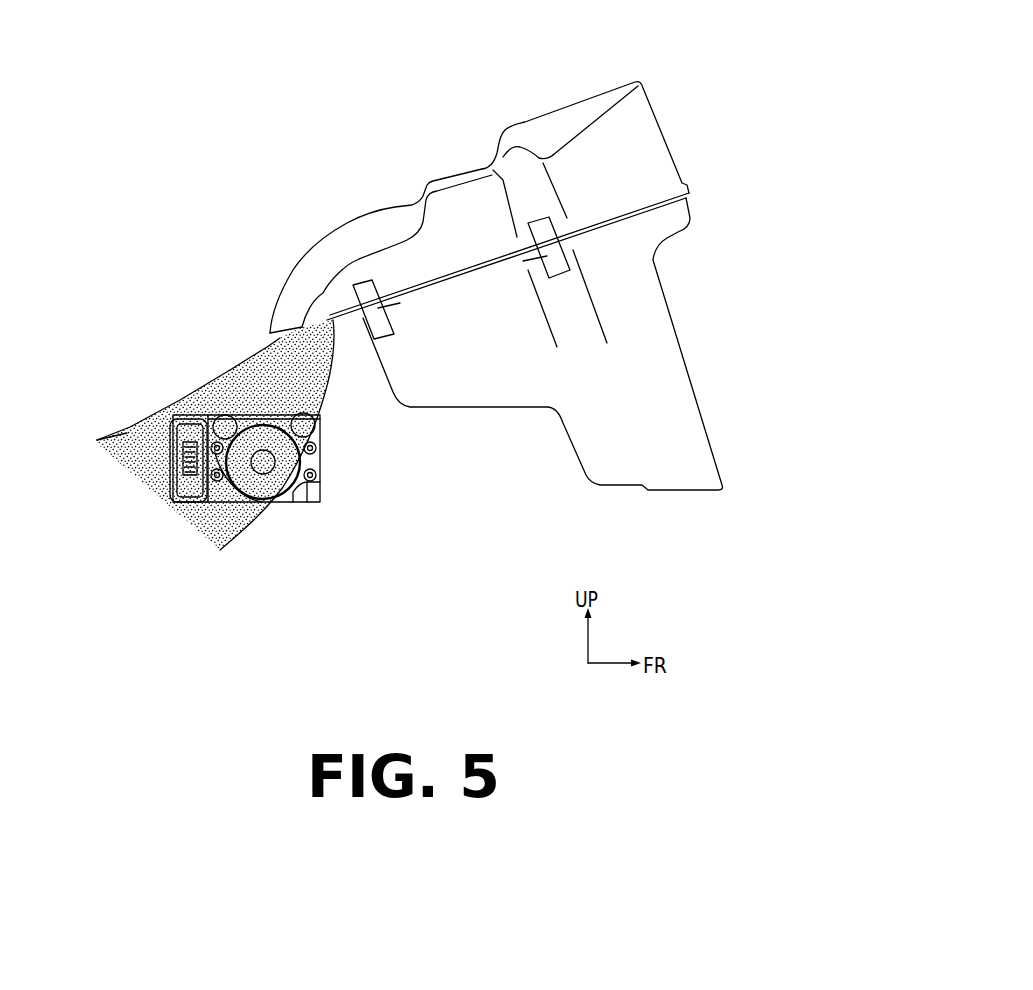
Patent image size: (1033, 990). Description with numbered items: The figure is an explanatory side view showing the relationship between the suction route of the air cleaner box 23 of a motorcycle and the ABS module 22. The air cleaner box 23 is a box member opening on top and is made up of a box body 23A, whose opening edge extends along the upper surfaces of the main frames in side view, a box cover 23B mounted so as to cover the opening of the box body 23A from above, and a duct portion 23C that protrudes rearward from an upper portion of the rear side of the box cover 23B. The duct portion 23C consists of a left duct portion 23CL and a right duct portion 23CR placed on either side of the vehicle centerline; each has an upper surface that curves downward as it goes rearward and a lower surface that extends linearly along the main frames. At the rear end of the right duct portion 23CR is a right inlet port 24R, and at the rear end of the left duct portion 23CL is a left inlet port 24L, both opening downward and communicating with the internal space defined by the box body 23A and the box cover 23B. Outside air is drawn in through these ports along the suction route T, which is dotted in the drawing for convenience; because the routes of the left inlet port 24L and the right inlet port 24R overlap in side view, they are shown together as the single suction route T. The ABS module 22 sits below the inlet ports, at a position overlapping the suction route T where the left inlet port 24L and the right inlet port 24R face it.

The air cleaner box 23 is at (651, 62).
The box body 23A is at (673, 360).
The box cover 23B is at (535, 125).
The duct portion 23C is at (370, 203).
The right duct portion 23CR is at (277, 313).
The left duct portion 23CL is at (381, 251).
The right inlet port 24R is at (237, 383).
The left inlet port 24L is at (215, 435).
The ABS module 22 is at (302, 512).
The suction route T is at (127, 433).